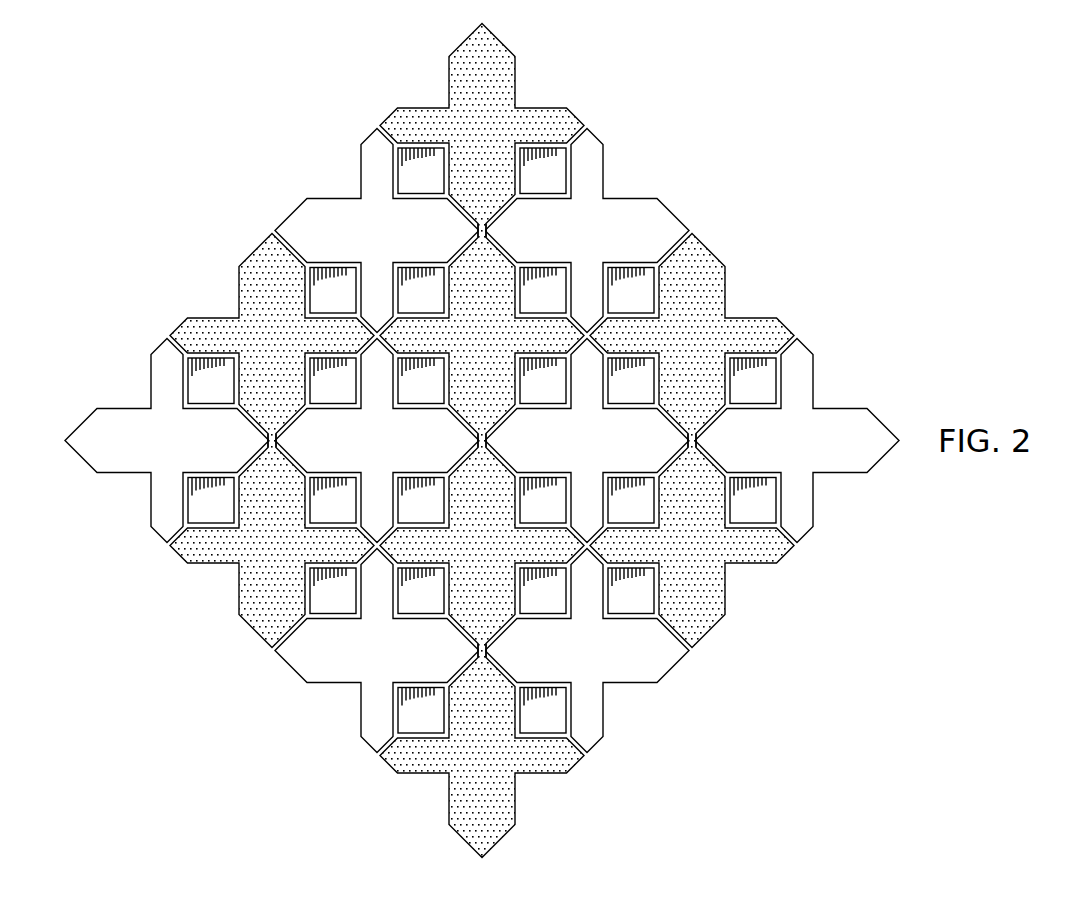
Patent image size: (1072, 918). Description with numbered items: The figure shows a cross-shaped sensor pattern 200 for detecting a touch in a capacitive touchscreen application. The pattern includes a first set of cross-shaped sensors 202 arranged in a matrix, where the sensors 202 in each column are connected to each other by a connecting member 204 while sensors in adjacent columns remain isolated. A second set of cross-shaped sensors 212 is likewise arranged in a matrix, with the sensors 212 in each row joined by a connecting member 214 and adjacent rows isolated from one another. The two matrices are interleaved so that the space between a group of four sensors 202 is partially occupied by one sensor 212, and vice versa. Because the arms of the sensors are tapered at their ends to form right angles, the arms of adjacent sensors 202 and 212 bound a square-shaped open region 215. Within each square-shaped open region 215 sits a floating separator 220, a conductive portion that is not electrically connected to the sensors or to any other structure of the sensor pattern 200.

The cross-shaped sensor pattern 200 is at (482, 441).
The first set of cross-shaped sensors 202 is at (508, 80).
The connecting member 204 is at (292, 426).
The second set of cross-shaped sensors 212 is at (598, 171).
The connecting member 214 is at (475, 230).
The square-shaped open region 215 is at (395, 172).
The floating separator 220 is at (542, 187).